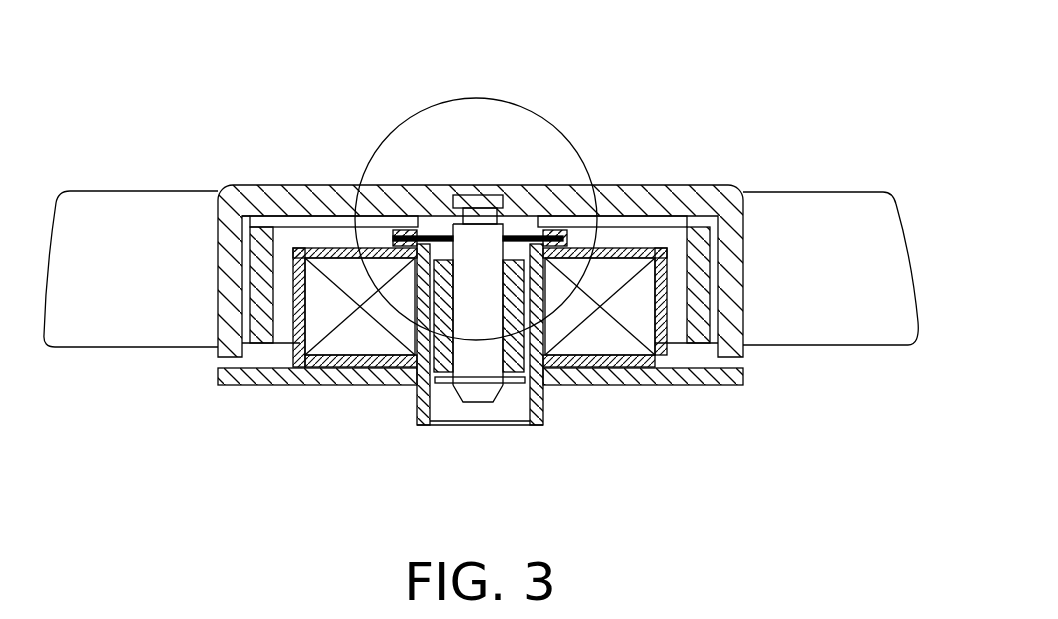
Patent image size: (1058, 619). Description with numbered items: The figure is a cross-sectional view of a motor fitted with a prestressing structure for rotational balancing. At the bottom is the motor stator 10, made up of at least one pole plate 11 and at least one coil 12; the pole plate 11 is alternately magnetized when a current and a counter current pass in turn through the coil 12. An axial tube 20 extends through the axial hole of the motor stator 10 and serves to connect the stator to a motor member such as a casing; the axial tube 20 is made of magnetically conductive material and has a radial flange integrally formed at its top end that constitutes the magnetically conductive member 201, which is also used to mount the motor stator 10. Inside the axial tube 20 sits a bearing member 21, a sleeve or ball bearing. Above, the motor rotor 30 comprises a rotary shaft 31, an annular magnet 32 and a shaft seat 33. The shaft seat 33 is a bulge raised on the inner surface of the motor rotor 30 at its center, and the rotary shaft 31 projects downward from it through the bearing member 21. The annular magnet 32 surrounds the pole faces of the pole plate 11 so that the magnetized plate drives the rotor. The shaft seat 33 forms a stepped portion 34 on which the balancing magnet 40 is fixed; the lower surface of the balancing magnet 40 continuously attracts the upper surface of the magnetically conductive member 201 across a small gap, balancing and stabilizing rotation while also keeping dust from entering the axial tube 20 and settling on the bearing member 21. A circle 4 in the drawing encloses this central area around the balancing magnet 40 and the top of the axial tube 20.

The enlarged detail region 4 is at (573, 137).
The motor stator 10 is at (272, 383).
The pole plate 11 is at (340, 248).
The coil 12 is at (352, 340).
The axial tube 20 is at (417, 398).
The magnetically conductive member 201 is at (405, 230).
The bearing member 21 is at (452, 372).
The motor rotor 30 is at (319, 161).
The rotary shaft 31 is at (485, 370).
The annular magnet 32 is at (262, 242).
The shaft seat 33 is at (515, 226).
The stepped portion 34 is at (512, 262).
The balancing magnet 40 is at (438, 235).